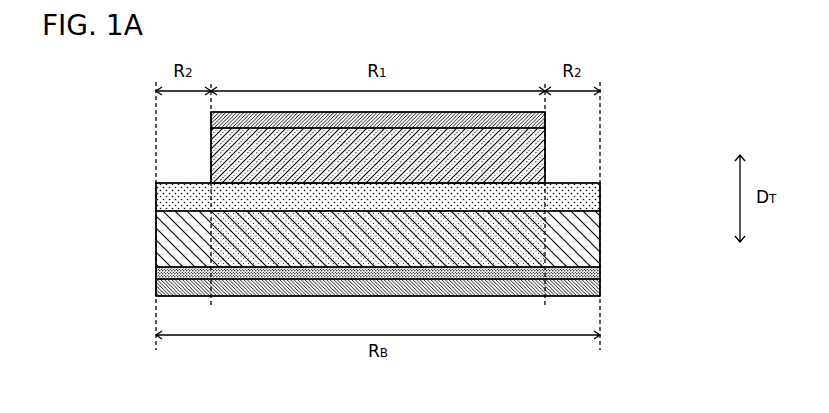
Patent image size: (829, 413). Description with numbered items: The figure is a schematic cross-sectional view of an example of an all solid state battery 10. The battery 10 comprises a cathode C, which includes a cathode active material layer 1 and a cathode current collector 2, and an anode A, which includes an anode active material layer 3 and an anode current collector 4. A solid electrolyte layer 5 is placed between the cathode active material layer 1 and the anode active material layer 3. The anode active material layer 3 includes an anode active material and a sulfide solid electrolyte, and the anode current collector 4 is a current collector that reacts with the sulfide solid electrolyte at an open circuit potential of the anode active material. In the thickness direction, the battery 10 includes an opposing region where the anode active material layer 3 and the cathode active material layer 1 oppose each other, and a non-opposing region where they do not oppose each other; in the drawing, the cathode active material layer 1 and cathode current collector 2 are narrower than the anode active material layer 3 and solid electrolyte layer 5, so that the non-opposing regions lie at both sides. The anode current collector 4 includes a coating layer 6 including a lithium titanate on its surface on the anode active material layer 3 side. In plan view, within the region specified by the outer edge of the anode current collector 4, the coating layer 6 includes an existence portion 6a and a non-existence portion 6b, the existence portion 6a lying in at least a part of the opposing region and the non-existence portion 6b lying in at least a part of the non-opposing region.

The all solid state battery 10 is at (607, 62).
The cathode active material layer 1 is at (545, 150).
The cathode current collector 2 is at (545, 117).
The anode active material layer 3 is at (585, 235).
The anode current collector 4 is at (600, 288).
The solid electrolyte layer 5 is at (600, 190).
The coating layer 6 is at (104, 238).
The existence portion 6a is at (205, 272).
The non-existence portion 6b is at (168, 268).
The cathode C is at (645, 113).
The anode A is at (661, 212).